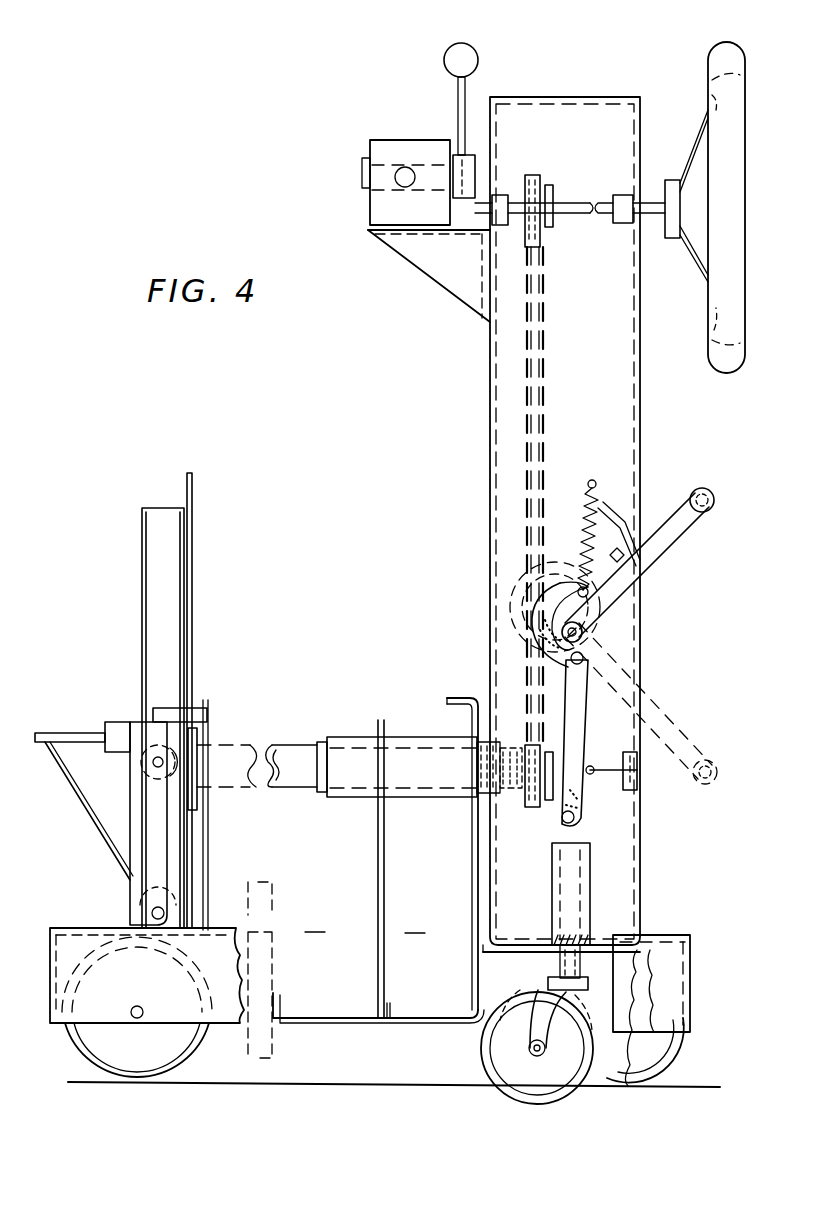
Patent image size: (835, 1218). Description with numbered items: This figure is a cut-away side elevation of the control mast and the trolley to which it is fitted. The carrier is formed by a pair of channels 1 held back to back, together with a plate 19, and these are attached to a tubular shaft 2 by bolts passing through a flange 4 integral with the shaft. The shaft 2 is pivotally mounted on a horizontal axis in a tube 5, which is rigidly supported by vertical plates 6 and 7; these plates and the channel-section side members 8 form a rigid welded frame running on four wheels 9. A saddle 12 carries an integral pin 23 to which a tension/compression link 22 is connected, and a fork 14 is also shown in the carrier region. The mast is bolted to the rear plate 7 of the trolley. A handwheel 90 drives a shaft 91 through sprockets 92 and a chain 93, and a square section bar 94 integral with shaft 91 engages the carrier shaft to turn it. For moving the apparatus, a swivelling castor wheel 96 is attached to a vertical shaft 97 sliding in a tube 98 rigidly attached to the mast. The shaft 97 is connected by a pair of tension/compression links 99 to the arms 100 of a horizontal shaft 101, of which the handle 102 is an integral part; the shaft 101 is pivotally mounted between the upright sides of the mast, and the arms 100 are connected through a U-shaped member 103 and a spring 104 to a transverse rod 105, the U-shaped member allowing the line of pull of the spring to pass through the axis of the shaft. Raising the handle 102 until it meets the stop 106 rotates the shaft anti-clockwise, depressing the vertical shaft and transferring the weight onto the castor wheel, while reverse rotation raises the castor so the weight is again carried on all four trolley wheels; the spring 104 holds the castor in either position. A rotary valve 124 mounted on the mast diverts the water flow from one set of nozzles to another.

The channels 1 is at (146, 510).
The plate 19 is at (191, 490).
The pin 23 is at (195, 708).
The tension/compression link 22 is at (209, 738).
The saddle 12 is at (140, 732).
The fork 14 is at (46, 737).
The flange 4 is at (198, 800).
The tubular shaft 2 is at (292, 757).
The tube 5 is at (420, 757).
The square section bar 94 is at (476, 797).
The vertical plate 6 is at (378, 844).
The rear plate 7 is at (458, 698).
The side members 8 is at (70, 940).
The wheels 9 is at (143, 1055).
The rotary valve 124 is at (378, 145).
The sprockets 92 is at (545, 186).
The chain 93 is at (537, 400).
The handwheel 90 is at (712, 55).
The transverse rod 105 is at (592, 480).
The spring 104 is at (600, 505).
The stop 106 is at (621, 547).
The handle 102 is at (665, 548).
The U-shaped member 103 is at (537, 612).
The horizontal shaft 101 is at (590, 597).
The arms 100 is at (585, 640).
The tension/compression links 99 is at (580, 720).
The vertical shaft 97 is at (575, 835).
The tube 98 is at (590, 898).
The shaft 91 is at (605, 777).
The castor wheel 96 is at (518, 1078).